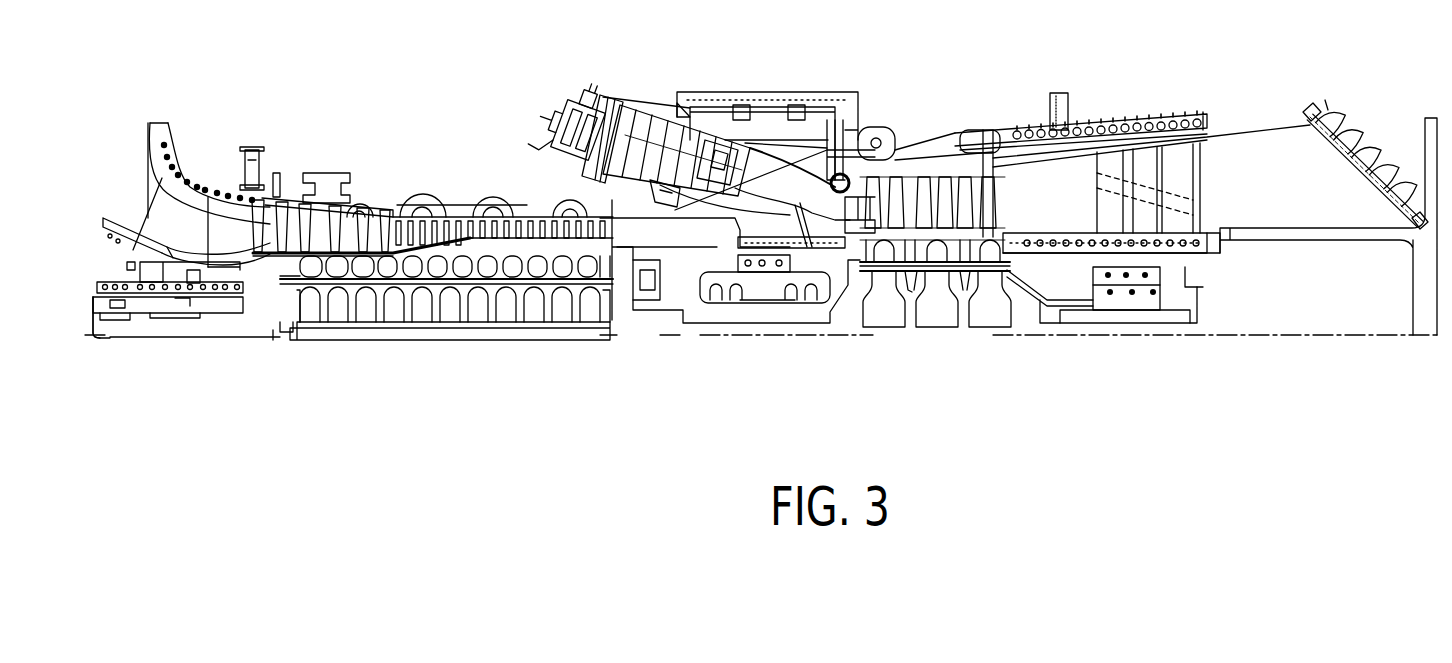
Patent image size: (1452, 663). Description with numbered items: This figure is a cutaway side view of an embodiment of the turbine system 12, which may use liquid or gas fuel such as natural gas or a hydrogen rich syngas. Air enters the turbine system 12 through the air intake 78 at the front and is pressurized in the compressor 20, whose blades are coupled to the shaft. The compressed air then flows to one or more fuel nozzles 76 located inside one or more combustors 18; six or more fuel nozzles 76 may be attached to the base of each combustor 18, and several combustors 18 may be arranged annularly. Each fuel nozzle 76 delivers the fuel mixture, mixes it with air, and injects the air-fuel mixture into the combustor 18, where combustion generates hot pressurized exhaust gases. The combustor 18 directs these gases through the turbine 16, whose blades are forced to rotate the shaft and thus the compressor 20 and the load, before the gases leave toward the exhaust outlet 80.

The turbine system 12 is at (788, 363).
The turbine 16 is at (1210, 83).
The combustor 18 is at (810, 118).
The compressor 20 is at (575, 193).
The fuel nozzle 76 is at (617, 122).
The air intake 78 is at (163, 225).
The exhaust outlet 80 is at (1357, 140).